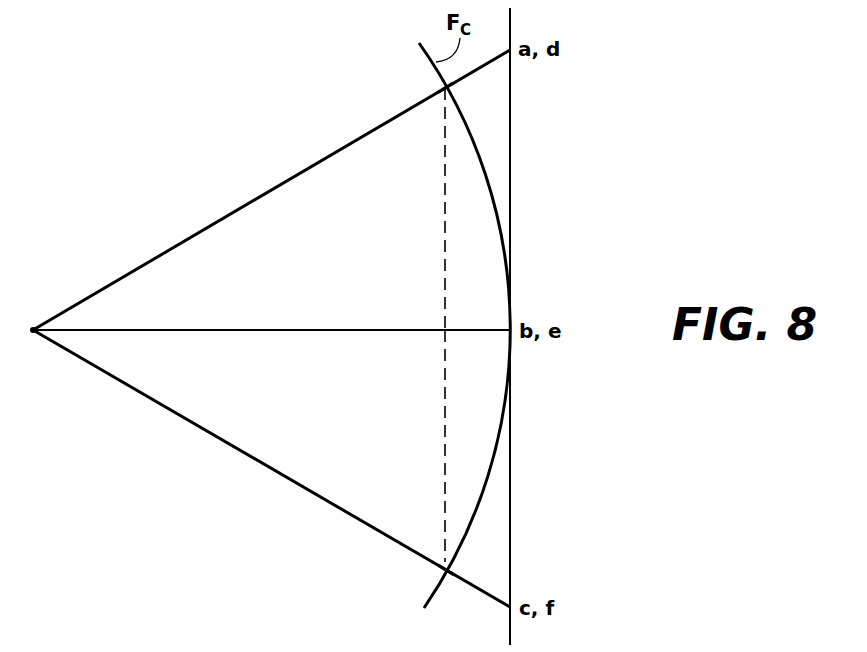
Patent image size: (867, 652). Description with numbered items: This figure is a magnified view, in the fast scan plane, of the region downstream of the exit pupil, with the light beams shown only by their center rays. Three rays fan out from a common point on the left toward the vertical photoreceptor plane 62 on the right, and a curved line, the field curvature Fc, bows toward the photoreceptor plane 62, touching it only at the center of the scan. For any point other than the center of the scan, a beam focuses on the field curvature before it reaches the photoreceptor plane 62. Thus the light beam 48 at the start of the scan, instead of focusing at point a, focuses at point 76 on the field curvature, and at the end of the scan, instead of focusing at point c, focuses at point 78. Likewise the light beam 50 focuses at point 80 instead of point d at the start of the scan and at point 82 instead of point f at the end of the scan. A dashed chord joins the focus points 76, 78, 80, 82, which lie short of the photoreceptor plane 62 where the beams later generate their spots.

The light beam 48 is at (227, 213).
The light beam 50 is at (270, 328).
The photoreceptor plane 62 is at (512, 170).
The point 76 is at (442, 85).
The point 78 is at (443, 568).
The point 80 is at (443, 93).
The point 82 is at (445, 560).